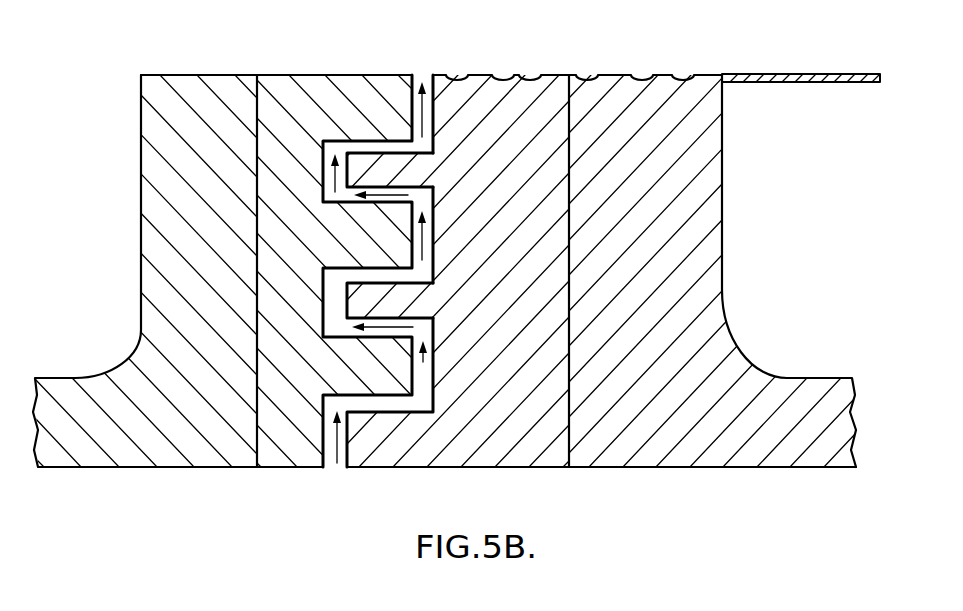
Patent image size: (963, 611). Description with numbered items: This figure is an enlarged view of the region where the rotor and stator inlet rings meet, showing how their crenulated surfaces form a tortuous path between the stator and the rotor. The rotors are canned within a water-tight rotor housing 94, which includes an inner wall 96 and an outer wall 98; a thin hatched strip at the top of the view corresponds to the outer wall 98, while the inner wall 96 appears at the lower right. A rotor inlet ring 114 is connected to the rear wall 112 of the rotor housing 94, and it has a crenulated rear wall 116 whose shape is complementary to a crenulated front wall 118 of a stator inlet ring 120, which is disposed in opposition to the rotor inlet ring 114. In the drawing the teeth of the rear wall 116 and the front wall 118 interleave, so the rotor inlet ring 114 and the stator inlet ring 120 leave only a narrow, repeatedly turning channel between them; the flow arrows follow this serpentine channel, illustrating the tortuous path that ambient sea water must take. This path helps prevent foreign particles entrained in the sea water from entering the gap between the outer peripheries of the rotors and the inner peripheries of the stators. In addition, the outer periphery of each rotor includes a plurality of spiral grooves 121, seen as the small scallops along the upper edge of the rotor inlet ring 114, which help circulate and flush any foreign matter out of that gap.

The rotor housing 94 is at (782, 177).
The inner wall 96 is at (805, 397).
The outer wall 98 is at (787, 82).
The rear wall 112 is at (672, 222).
The rotor inlet ring 114 is at (508, 120).
The crenulated rear wall 116 is at (374, 152).
The crenulated front wall 118 is at (368, 271).
The stator inlet ring 120 is at (299, 413).
The spiral grooves 121 is at (684, 73).